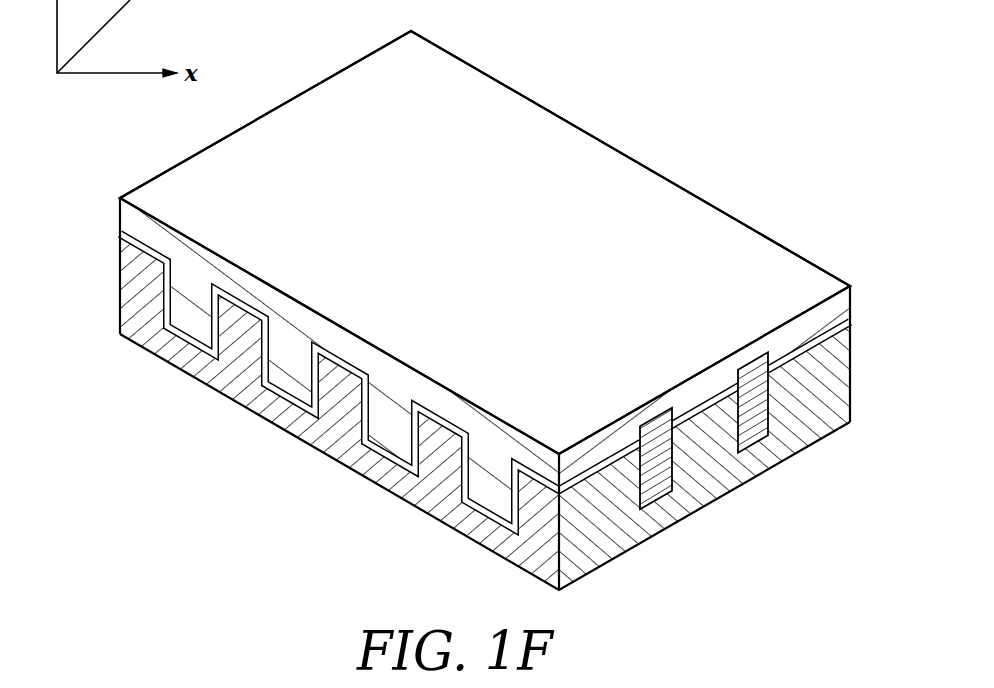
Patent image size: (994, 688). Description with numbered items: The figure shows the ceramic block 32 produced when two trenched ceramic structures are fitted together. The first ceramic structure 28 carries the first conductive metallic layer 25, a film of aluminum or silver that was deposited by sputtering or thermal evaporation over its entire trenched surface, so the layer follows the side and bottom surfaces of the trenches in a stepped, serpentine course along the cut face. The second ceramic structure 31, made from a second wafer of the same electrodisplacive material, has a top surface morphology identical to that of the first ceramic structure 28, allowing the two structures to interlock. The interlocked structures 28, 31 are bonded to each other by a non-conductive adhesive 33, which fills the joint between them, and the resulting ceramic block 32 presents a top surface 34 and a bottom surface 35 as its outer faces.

The first conductive metallic layer 25 is at (120, 232).
The first ceramic structure 28 is at (337, 412).
The second ceramic structure 31 is at (287, 375).
The ceramic block 32 is at (752, 172).
The non-conductive adhesive 33 is at (120, 238).
The top surface 34 is at (413, 504).
The bottom surface 35 is at (603, 155).